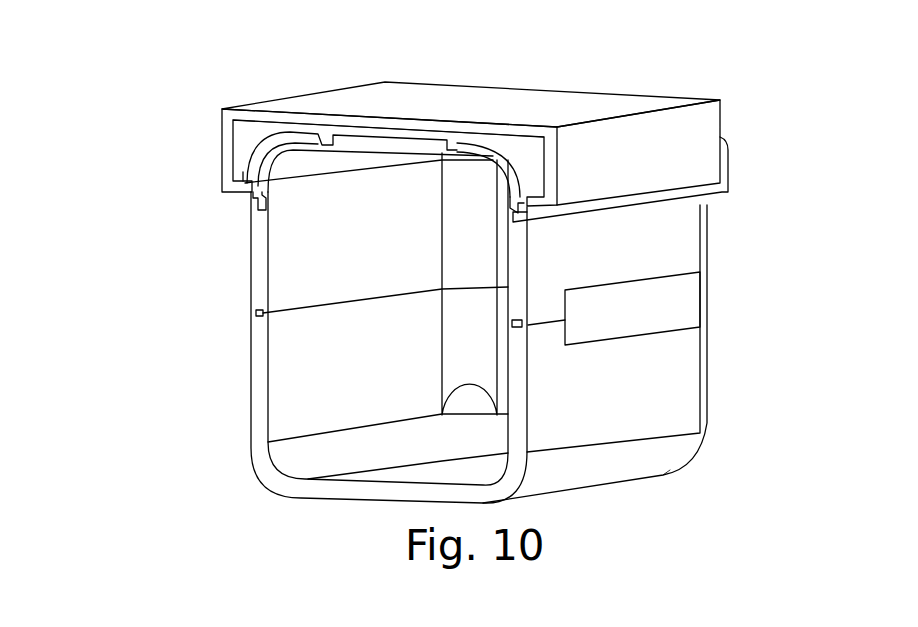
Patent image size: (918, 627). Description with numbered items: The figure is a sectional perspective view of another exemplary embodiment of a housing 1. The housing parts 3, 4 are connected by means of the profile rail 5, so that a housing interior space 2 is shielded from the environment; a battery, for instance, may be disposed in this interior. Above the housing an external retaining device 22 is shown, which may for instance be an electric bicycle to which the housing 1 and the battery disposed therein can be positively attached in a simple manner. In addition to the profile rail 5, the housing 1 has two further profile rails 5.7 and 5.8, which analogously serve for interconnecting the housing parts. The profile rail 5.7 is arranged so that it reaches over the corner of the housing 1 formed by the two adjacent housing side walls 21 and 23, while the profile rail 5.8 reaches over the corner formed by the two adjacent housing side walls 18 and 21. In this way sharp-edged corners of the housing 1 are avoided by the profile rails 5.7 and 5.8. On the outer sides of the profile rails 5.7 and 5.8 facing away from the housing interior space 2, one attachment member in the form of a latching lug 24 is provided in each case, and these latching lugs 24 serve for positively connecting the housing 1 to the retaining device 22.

The housing 1 is at (162, 296).
The housing interior space 2 is at (398, 352).
The housing part 3 is at (665, 262).
The housing part 4 is at (670, 403).
The profile rail 5 is at (640, 318).
The profile rail 5.7 is at (270, 155).
The profile rail 5.8 is at (522, 154).
The housing side wall 18 is at (657, 223).
The housing side wall 21 is at (396, 130).
The external retaining device 22 is at (339, 103).
The housing side wall 23 is at (243, 341).
The latching lug 24 is at (547, 178).